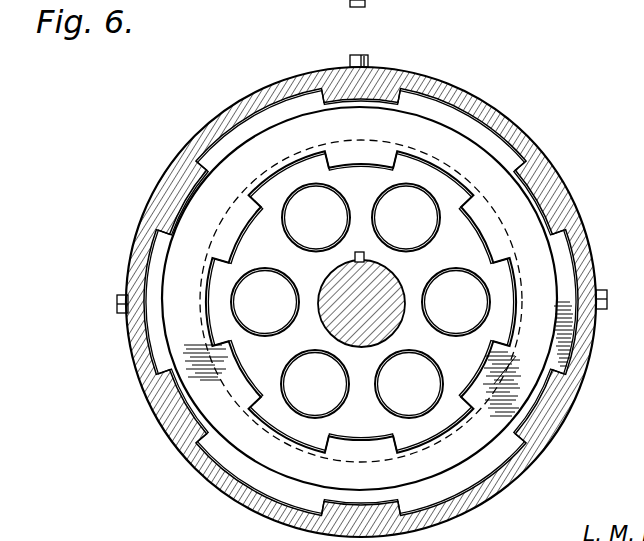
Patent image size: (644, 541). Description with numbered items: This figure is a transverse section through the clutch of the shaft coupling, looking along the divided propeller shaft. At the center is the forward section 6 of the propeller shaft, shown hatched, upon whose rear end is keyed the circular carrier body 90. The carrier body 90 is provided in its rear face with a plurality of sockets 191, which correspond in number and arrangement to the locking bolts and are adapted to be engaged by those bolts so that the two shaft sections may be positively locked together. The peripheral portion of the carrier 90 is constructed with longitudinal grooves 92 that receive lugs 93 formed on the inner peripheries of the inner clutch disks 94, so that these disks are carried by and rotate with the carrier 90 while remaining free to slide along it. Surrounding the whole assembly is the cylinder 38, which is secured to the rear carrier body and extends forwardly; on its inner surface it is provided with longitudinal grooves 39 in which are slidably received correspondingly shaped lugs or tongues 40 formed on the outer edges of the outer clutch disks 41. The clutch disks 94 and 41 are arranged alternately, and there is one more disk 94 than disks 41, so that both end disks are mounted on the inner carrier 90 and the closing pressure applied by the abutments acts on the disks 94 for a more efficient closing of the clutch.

The cylinder 38 is at (485, 112).
The longitudinal grooves 39 is at (275, 90).
The lugs or tongues 40 is at (228, 140).
The clutch disks 41 is at (158, 262).
The clutch disks 94 is at (187, 318).
The lugs 93 is at (248, 398).
The longitudinal grooves 92 is at (251, 378).
The circular carrier body 90 is at (361, 302).
The sockets 191 is at (360, 301).
The forward section 6 is at (393, 286).